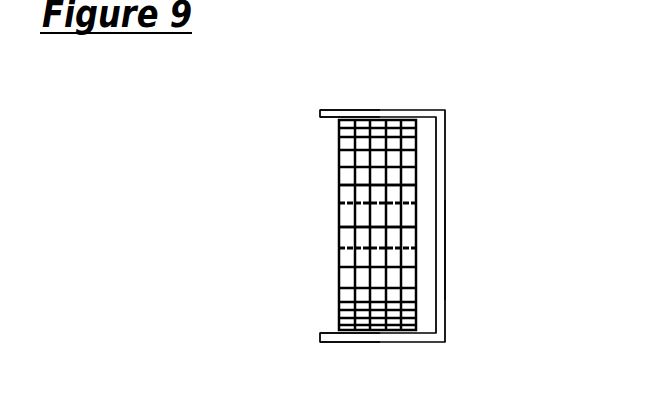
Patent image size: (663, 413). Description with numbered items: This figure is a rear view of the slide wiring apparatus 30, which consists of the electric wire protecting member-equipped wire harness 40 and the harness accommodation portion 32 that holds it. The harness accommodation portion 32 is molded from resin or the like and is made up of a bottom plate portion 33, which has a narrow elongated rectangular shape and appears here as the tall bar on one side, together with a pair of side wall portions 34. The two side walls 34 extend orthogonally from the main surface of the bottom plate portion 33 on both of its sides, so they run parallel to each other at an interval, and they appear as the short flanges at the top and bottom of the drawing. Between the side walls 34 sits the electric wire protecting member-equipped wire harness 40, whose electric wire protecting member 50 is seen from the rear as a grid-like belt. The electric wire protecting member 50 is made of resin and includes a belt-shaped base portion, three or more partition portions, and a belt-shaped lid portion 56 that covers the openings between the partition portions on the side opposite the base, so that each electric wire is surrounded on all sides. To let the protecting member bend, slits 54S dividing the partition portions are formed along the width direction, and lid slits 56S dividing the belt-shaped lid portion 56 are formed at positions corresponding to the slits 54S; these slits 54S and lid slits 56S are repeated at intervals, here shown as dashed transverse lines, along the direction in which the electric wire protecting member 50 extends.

The slide wiring apparatus 30 is at (401, 96).
The harness accommodation portion 32 is at (448, 153).
The bottom plate portion 33 is at (444, 245).
The side wall portion 34 is at (330, 110).
The electric wire protecting member-equipped wire harness 40 is at (325, 165).
The electric wire protecting member 50 is at (417, 277).
The belt-shaped lid portion 56 is at (413, 217).
The lid slit 56S is at (357, 188).
The slit 54S is at (360, 255).